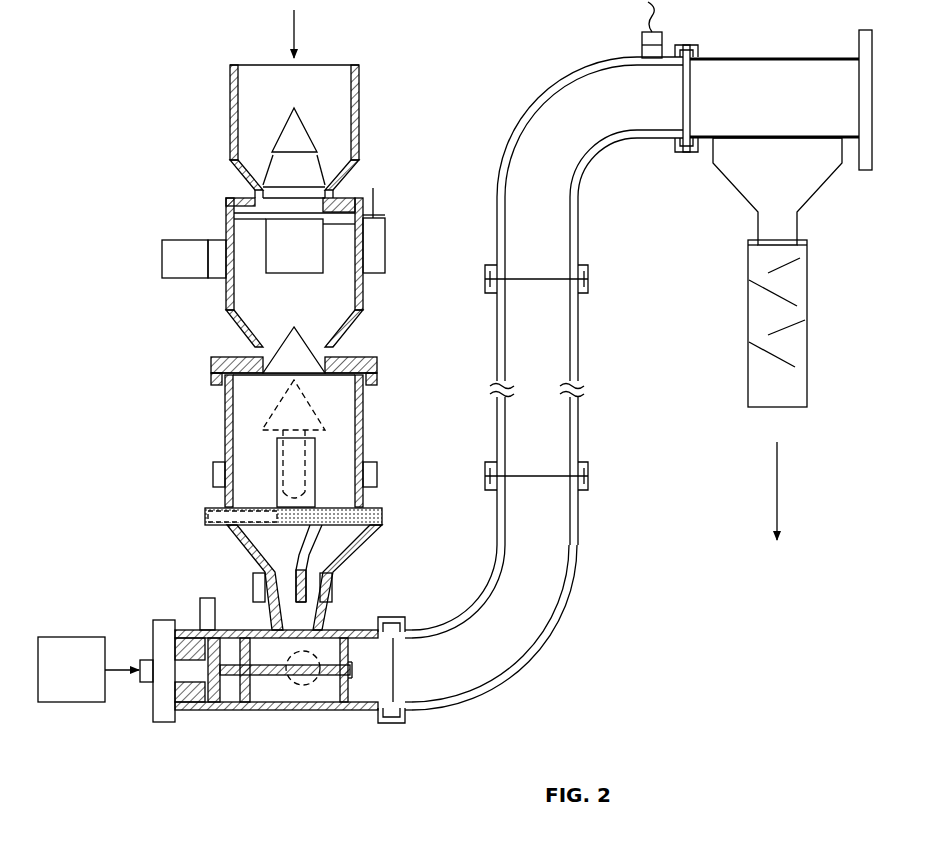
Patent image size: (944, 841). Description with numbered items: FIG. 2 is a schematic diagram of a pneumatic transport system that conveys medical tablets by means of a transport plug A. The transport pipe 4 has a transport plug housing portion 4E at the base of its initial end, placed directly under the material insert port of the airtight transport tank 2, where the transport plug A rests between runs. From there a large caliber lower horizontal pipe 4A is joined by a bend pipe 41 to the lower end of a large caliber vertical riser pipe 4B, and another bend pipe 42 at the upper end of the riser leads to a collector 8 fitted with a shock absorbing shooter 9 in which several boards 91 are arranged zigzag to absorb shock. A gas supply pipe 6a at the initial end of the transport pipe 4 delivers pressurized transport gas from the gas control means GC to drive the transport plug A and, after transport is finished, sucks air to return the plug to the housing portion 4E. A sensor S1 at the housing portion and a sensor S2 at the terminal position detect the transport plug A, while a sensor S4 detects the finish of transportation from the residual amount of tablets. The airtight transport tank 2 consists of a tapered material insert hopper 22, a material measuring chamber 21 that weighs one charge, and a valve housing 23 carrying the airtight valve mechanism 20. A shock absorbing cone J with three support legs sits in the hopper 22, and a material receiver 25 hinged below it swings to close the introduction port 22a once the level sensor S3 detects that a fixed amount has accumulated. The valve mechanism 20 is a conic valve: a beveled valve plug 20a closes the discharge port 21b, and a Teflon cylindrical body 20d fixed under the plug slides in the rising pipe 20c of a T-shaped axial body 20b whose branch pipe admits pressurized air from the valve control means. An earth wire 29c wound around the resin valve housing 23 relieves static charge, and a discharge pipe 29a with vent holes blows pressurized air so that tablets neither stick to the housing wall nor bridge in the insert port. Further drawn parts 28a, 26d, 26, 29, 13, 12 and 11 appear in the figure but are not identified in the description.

The airtight transport tank 2 is at (204, 182).
The shock absorbing cone J is at (268, 128).
The material insert hopper 22 is at (357, 150).
The introduction port 22a is at (255, 192).
The sealing plate 28a is at (348, 196).
The connecting line 26d is at (376, 210).
The material receiver 25 is at (275, 240).
The level sensor S3 is at (172, 252).
The valve unit 26 is at (380, 258).
The material measuring chamber 21 is at (365, 298).
The valve plug 20a is at (300, 355).
The discharge port 21b is at (245, 356).
The cylindrical body 20d is at (310, 378).
The airtight valve mechanism 20 is at (208, 374).
The rising pipe 20c is at (315, 450).
The valve housing 23 is at (206, 453).
The bottom plate 29 is at (375, 508).
The T-shaped axial body 20b is at (232, 512).
The discharge pipe 29a is at (320, 540).
The earth wire 29c is at (270, 618).
The sensor S1 is at (200, 618).
The gas supply pipe 6a is at (148, 660).
The gas control means GC is at (88, 669).
The end flange 13 is at (202, 712).
The piston plate 12 is at (232, 712).
The transport plug A is at (272, 672).
The transport plug housing portion 4E is at (290, 700).
The sensor S4 is at (303, 686).
The piston 11 is at (358, 712).
The lower horizontal pipe 4A is at (388, 716).
The bend pipe 41 is at (572, 596).
The vertical riser pipe 4B is at (562, 348).
The transport pipe 4 is at (488, 186).
The bend pipe 42 is at (534, 134).
The sensor S2 is at (640, 54).
The collector 8 is at (820, 176).
The shock absorbing shooter 9 is at (800, 350).
The boards 91 is at (800, 292).